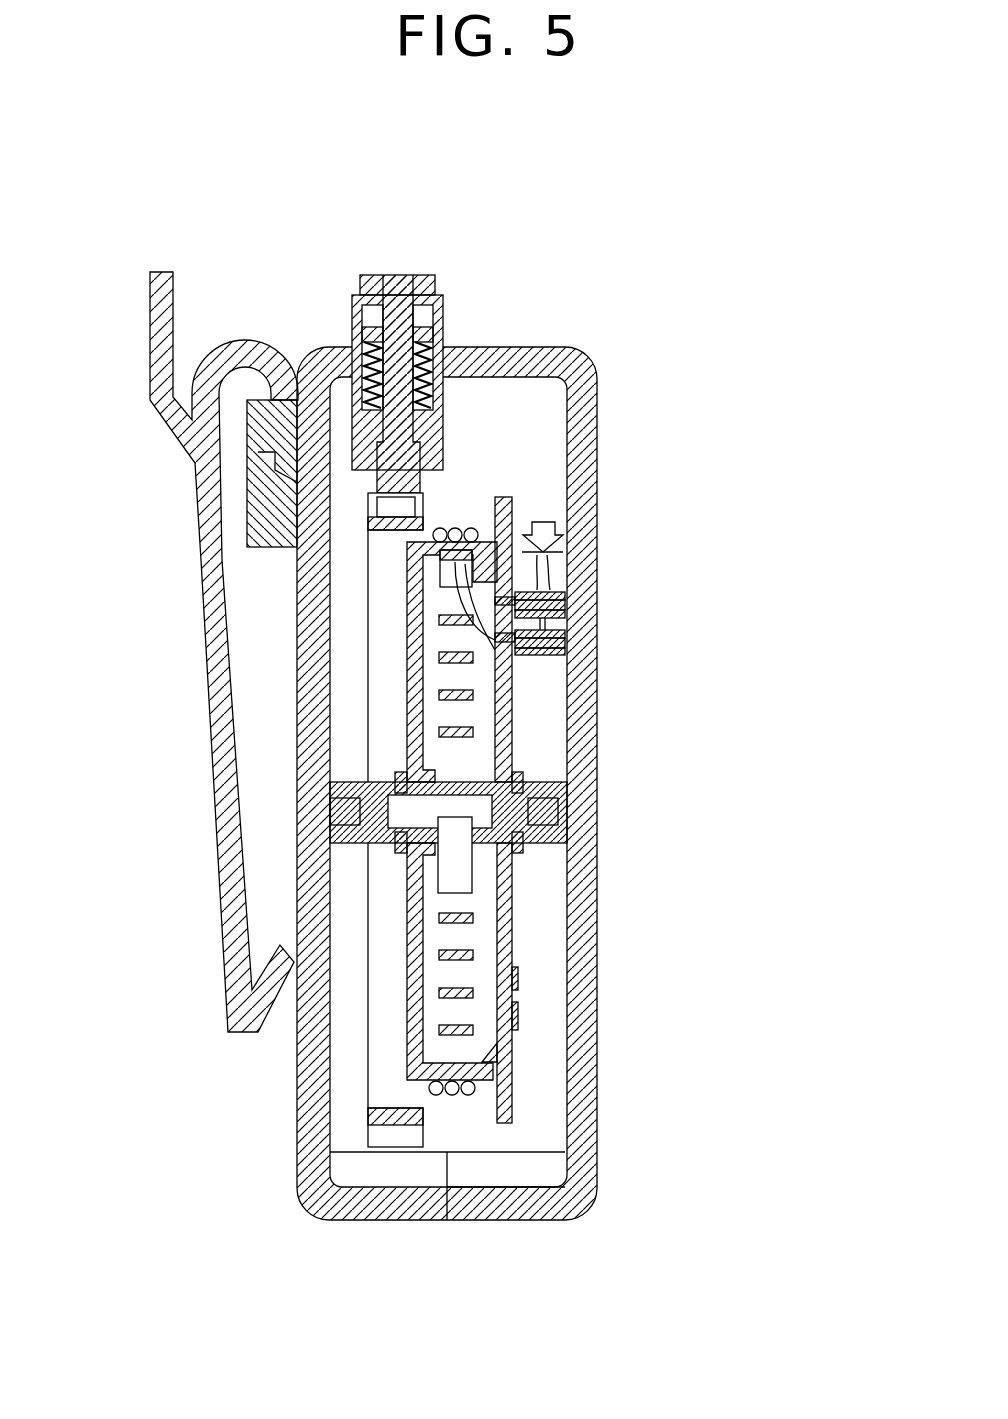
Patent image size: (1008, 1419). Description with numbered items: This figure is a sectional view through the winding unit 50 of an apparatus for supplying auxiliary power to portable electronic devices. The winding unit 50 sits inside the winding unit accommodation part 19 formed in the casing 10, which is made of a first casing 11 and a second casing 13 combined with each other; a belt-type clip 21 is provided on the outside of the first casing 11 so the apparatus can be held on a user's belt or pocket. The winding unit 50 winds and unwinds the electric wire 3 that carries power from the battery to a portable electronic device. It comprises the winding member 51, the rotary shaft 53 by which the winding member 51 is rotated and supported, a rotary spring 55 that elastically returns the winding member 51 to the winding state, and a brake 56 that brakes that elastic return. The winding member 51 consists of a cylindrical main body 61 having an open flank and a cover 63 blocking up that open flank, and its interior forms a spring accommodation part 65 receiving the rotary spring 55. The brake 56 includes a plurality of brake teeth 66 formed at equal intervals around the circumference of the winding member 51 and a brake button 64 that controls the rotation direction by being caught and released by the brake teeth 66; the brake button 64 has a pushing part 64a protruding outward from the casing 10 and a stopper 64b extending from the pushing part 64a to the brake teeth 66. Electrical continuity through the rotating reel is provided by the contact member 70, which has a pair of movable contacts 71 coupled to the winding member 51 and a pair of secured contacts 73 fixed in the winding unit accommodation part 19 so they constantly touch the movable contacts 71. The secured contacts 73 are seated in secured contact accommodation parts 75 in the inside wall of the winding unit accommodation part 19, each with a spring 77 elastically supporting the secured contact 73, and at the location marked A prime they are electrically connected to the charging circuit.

The winding unit 50 is at (808, 312).
The clip 21 is at (196, 478).
The brake 56 is at (564, 332).
The brake button 64 is at (379, 313).
The pushing part 64a is at (444, 312).
The stopper 64b is at (373, 483).
The electric wire 3 is at (440, 604).
The winding unit accommodation part 19 is at (350, 1050).
The main body 61 is at (438, 546).
The brake teeth 66 is at (470, 550).
The spring accommodation part 65 is at (497, 736).
The contact member 70 is at (617, 615).
The movable contacts 71 is at (567, 593).
The secured contacts 73 is at (566, 600).
The spring 77 is at (566, 637).
The secured contact accommodation parts 75 is at (566, 655).
The rotary shaft 53 is at (518, 808).
The rotary spring 55 is at (480, 916).
The winding member 51 is at (575, 1059).
The cover 63 is at (513, 1070).
The casing 10 is at (486, 1244).
The first casing 11 is at (433, 1205).
The second casing 13 is at (506, 1240).